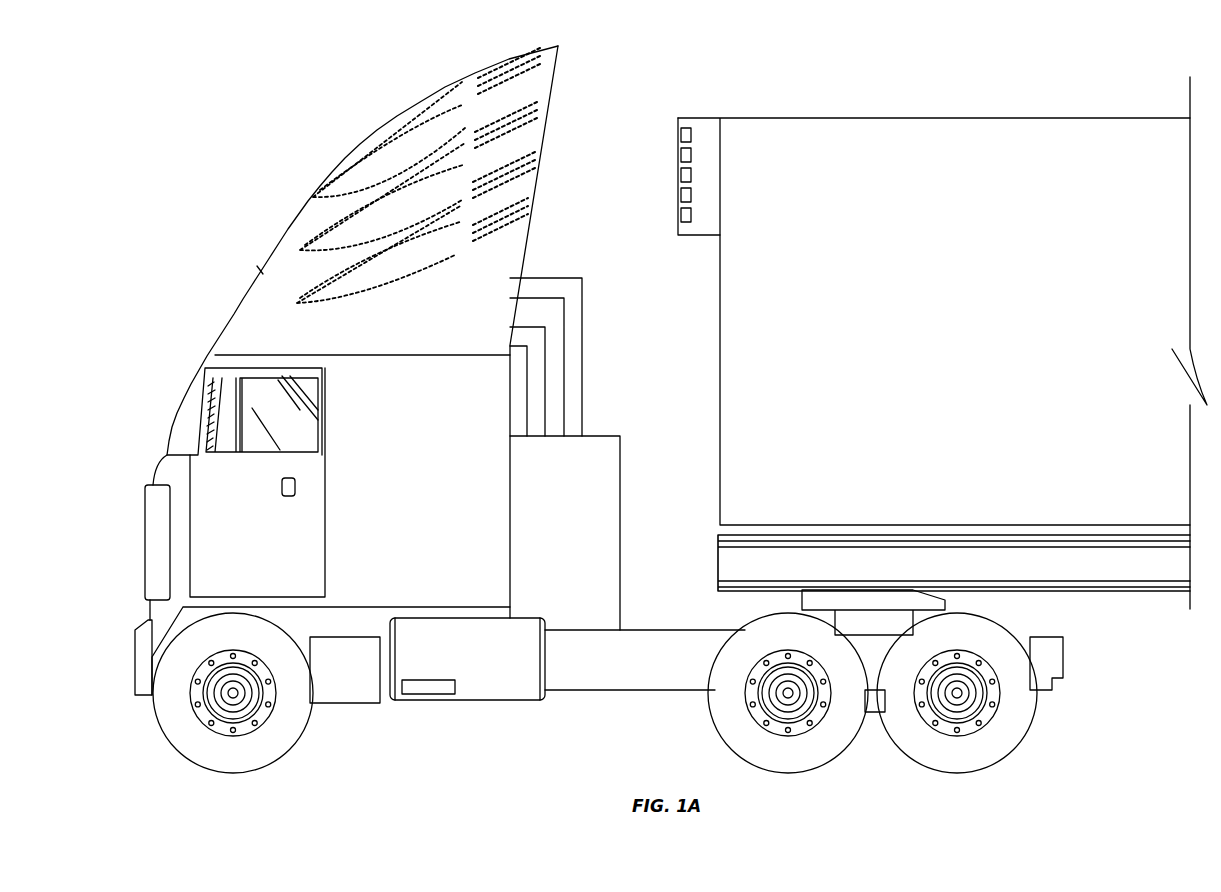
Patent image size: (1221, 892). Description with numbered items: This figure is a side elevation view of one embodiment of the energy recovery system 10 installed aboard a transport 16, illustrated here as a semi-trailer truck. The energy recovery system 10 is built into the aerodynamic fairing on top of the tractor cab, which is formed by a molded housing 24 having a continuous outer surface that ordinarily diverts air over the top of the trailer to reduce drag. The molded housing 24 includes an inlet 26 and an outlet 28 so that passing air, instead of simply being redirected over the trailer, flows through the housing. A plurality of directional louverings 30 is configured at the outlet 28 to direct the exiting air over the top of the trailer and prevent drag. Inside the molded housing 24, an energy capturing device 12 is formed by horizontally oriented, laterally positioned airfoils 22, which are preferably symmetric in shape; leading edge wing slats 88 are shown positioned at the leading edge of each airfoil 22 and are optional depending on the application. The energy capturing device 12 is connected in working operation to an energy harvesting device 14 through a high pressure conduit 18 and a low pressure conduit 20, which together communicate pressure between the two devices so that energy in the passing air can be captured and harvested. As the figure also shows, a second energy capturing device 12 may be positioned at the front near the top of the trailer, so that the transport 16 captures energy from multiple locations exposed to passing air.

The energy recovery system 10 is at (277, 82).
The energy capturing device 12 is at (292, 233).
The energy harvesting device 14 is at (624, 478).
The transport 16 is at (190, 395).
The high pressure conduit 18 is at (532, 388).
The low pressure conduit 20 is at (577, 330).
The airfoil 22 is at (345, 192).
The molded housing 24 is at (415, 308).
The inlet 26 is at (260, 270).
The outlet 28 is at (565, 88).
The directional louverings 30 is at (560, 52).
The leading edge wing slats 88 is at (313, 197).